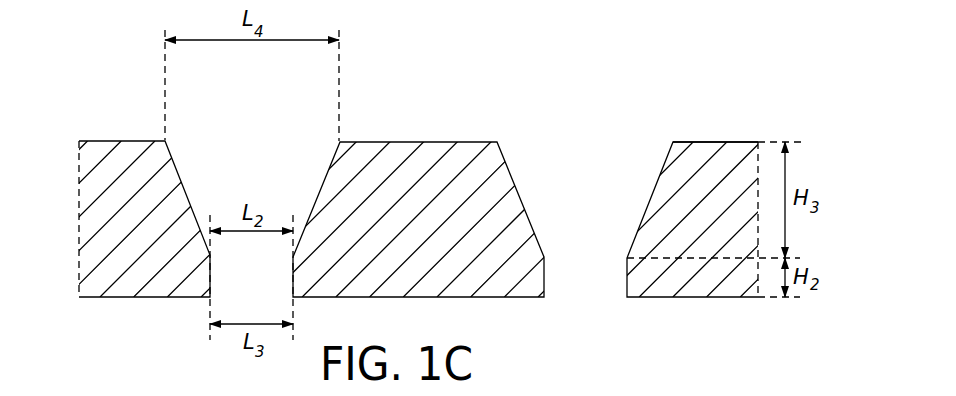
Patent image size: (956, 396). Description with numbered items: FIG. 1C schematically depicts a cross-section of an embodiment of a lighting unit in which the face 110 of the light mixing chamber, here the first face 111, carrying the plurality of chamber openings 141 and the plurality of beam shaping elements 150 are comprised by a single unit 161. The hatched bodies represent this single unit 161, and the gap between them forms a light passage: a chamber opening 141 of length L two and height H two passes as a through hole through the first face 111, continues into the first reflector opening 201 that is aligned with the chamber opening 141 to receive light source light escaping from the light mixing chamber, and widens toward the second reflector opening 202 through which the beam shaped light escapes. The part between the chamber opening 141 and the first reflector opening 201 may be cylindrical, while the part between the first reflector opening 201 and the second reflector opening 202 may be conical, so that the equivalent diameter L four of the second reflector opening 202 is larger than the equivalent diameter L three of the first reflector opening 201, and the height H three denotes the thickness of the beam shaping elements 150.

The face 110 is at (465, 246).
The first face 111 is at (115, 298).
The first reflector opening 201 is at (578, 302).
The second reflector opening 202 is at (575, 138).
The beam shaping element 150 is at (612, 147).
The single unit 161 is at (724, 122).
The chamber opening 141 is at (465, 207).